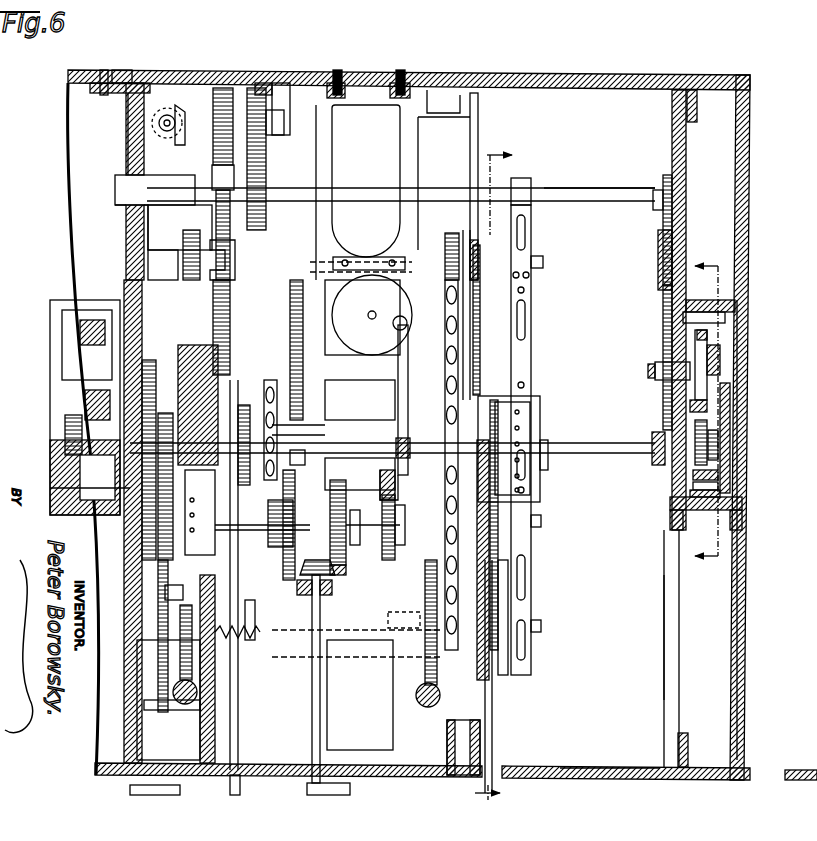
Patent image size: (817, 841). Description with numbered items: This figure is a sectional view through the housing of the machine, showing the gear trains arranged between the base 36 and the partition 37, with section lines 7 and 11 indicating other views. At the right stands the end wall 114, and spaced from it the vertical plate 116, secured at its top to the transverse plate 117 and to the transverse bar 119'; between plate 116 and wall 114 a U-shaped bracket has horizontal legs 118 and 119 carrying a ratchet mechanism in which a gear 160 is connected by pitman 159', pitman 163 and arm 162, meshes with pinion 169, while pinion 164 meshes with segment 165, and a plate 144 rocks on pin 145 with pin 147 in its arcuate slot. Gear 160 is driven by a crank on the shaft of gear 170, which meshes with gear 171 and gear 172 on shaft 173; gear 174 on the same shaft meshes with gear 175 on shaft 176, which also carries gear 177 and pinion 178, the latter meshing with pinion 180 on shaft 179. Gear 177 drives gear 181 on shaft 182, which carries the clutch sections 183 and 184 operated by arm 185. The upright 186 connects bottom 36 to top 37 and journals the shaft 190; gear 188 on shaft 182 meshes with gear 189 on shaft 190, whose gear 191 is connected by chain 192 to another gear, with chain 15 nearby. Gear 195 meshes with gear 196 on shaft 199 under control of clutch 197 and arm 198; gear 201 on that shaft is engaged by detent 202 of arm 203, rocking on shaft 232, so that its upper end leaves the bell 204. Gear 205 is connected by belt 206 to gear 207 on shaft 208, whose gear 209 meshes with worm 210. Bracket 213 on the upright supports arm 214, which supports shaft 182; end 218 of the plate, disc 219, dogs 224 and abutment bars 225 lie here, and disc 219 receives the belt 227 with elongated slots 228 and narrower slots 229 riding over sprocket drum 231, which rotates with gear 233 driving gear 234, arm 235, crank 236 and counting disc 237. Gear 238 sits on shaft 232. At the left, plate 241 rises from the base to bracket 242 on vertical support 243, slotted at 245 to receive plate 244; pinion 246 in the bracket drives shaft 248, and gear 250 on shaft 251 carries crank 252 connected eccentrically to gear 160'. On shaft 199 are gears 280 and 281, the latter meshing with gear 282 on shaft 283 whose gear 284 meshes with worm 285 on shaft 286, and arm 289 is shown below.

The section line 7- 7 is at (500, 475).
The section line 11- 11 is at (706, 403).
The chain 15 is at (255, 690).
The base 36 is at (605, 765).
The partition 37 is at (128, 140).
The end wall 114 is at (744, 600).
The plate 116 is at (664, 575).
The transversely extending plate 117 is at (708, 90).
The bracket leg 118 is at (740, 290).
The bracket leg 119 is at (726, 526).
The transversely extending bar 119' is at (738, 741).
The plate 144 is at (720, 488).
The pin 145 is at (740, 505).
The pin 147 is at (720, 478).
The pitman 159' is at (75, 476).
The gear 160 is at (742, 365).
The gear 160' is at (63, 353).
The arm 162 is at (710, 334).
The pitman 163 is at (690, 407).
The pinion 164 is at (718, 440).
The segment 165 is at (720, 466).
The pinion 169 is at (712, 420).
The gear 170 is at (655, 370).
The gear 171 is at (660, 300).
The gear 172 is at (660, 180).
The shaft 173 is at (602, 176).
The gear 174 is at (262, 190).
The gear 175 is at (288, 85).
The shaft 176 is at (223, 85).
The gear 177 is at (256, 85).
The pinion 178 is at (172, 148).
The shaft 179 is at (170, 115).
The pinion 180 is at (145, 172).
The gear 181 is at (215, 212).
The shaft 182 is at (422, 265).
The clutch section 183 is at (236, 216).
The clutch section 184 is at (240, 250).
The arm 185 is at (245, 745).
The upright 186 is at (400, 158).
The gear 188 is at (325, 227).
The gear 189 is at (325, 363).
The shaft 190 is at (358, 380).
The gear 191 is at (255, 335).
The chain 192 is at (300, 420).
The gear 195 is at (300, 478).
The gear 196 is at (312, 590).
The clutch 197 is at (338, 576).
The arm 198 is at (282, 600).
The shaft 199 is at (366, 518).
The gear 201 is at (400, 545).
The detent 202 is at (400, 480).
The arm 203 is at (402, 402).
The bell 204 is at (412, 305).
The gear 205 is at (450, 250).
The belt 206 is at (452, 350).
The gear 207 is at (472, 650).
The shaft 208 is at (540, 626).
The gear 209 is at (420, 668).
The worm 210 is at (416, 700).
The bracket 213 is at (440, 108).
The arm 214 is at (478, 102).
The plate end 218 is at (520, 182).
The disc 219 is at (535, 262).
The dog 224 is at (480, 238).
The abutment bar 225 is at (480, 258).
The belt 227 is at (532, 351).
The elongated slot 228 is at (532, 322).
The narrower slot 229 is at (532, 294).
The sprocket drum 231 is at (540, 470).
The shaft 232 is at (598, 453).
The gear 233 is at (540, 424).
The gear 234 is at (532, 522).
The arm 235 is at (532, 582).
The crank 236 is at (482, 745).
The counting disc 237 is at (482, 762).
The gear 238 is at (312, 456).
The plate 241 is at (245, 700).
The bracket 242 is at (214, 350).
The vertical support 243 is at (124, 284).
The transversely extending plate 244 is at (128, 128).
The slot 245 is at (118, 196).
The pinion 246 is at (110, 420).
The shaft 248 is at (150, 470).
The gear 250 is at (90, 392).
The shaft 251 is at (70, 365).
The crank 252 is at (95, 405).
The gear 280 is at (120, 575).
The gear 281 is at (140, 608).
The gear 282 is at (170, 638).
The shaft 283 is at (182, 605).
The gear 284 is at (185, 665).
The worm 285 is at (186, 705).
The shaft 286 is at (118, 760).
The arm 289 is at (380, 620).